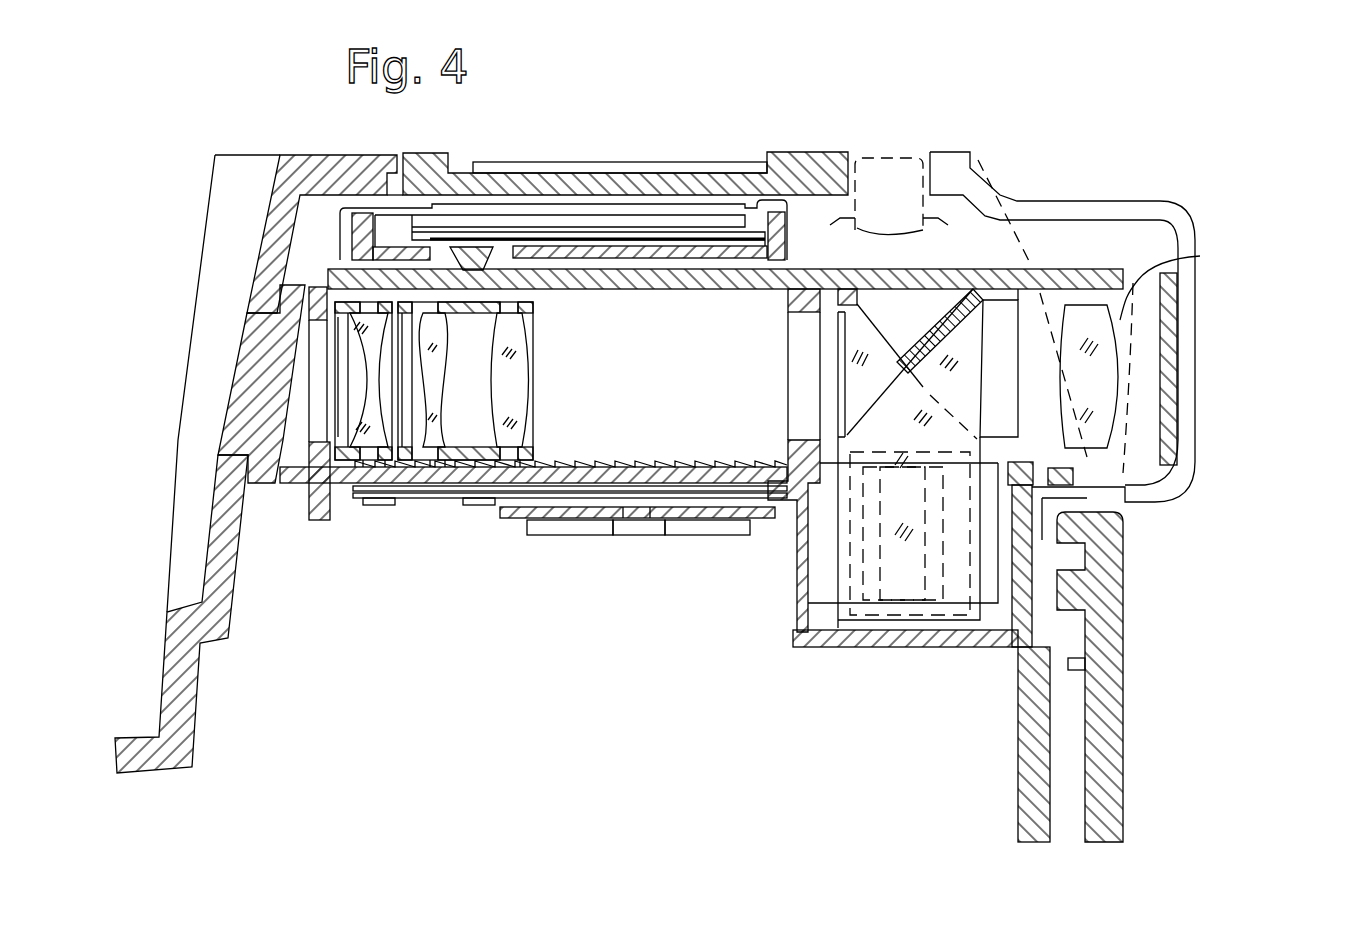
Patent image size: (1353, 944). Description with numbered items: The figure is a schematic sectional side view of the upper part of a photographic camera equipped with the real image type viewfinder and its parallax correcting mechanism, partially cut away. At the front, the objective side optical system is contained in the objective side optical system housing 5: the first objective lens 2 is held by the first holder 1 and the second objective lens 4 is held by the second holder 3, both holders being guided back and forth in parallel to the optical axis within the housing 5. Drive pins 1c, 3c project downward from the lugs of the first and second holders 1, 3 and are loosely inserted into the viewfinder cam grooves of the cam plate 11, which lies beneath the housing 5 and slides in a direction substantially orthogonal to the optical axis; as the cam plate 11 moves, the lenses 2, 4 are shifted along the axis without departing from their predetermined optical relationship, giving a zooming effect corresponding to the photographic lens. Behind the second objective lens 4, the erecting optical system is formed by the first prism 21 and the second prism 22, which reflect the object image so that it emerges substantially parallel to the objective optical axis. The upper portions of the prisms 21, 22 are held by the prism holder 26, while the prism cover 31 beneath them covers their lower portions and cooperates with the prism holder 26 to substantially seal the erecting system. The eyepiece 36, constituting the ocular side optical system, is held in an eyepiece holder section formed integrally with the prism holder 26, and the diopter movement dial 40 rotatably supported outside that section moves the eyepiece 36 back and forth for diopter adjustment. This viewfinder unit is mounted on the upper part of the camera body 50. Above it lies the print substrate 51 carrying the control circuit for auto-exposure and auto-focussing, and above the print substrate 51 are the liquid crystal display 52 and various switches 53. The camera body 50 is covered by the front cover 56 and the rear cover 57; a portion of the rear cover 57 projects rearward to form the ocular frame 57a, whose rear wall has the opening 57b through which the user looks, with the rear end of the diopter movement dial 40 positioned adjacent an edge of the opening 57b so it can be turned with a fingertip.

The first holder 1 is at (347, 317).
The drive pin 1c is at (377, 505).
The first objective lens 2 is at (367, 333).
The second holder 3 is at (446, 485).
The drive pin 3c is at (477, 507).
The second objective lens 4 is at (508, 378).
The objective side optical system housing 5 is at (650, 460).
The cam plate 11 is at (572, 498).
The first prism 21 is at (857, 378).
The second prism 22 is at (1000, 317).
The prism holder 26 is at (797, 580).
The prism cover 31 is at (853, 650).
The eyepiece 36 is at (1093, 402).
The diopter movement dial 40 is at (1210, 257).
The camera body 50 is at (1023, 798).
The print substrate 51 is at (957, 267).
The liquid crystal display 52 is at (693, 162).
The switches 53 is at (877, 167).
The front cover 56 is at (222, 527).
The rear cover 57 is at (1017, 198).
The ocular frame 57a is at (1163, 212).
The opening 57b is at (1187, 358).